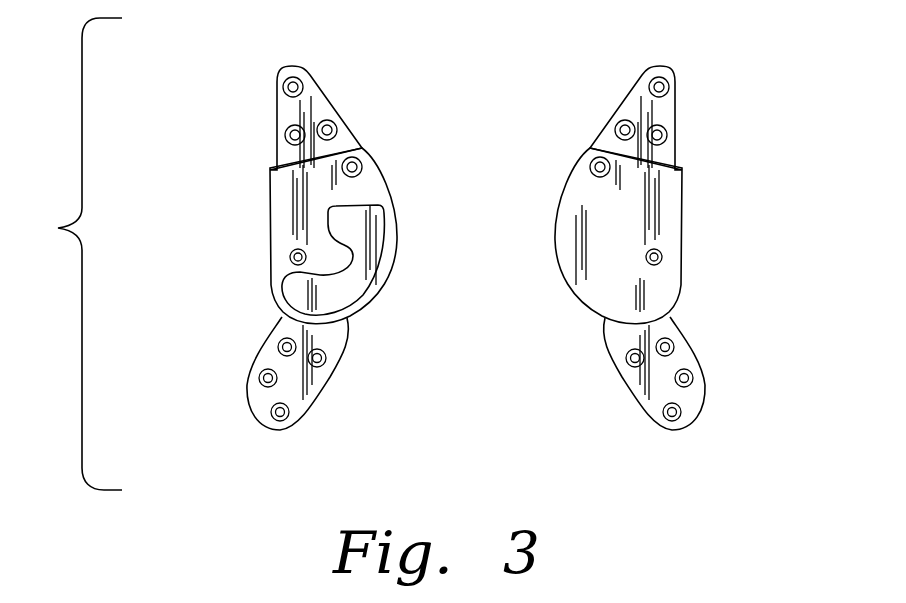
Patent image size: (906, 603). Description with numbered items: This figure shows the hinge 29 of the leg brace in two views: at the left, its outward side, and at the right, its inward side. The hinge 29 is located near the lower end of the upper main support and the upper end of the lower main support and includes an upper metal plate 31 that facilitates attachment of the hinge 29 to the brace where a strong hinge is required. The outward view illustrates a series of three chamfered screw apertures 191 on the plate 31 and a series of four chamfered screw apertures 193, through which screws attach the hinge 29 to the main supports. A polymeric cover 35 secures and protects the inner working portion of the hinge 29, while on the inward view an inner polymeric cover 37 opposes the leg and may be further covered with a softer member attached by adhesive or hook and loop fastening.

The hinge 29 is at (68, 254).
The upper metal plate 31 is at (285, 111).
The polymeric cover 35 is at (285, 227).
The inner polymeric cover 37 is at (578, 256).
The chamfered screw apertures 191 is at (327, 122).
The chamfered screw apertures 193 is at (270, 413).